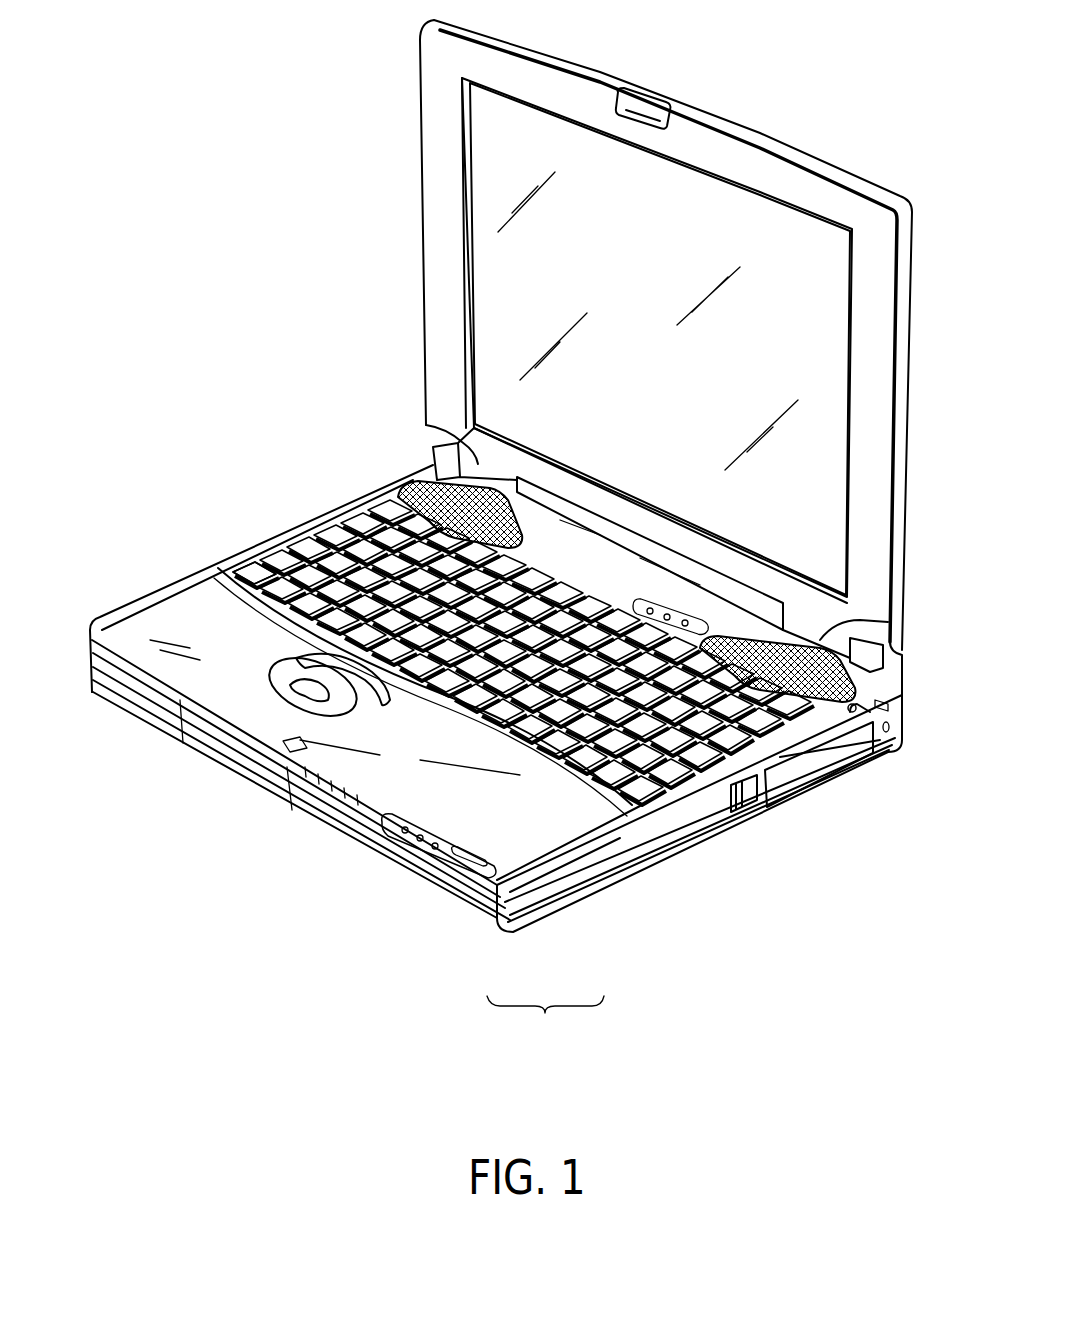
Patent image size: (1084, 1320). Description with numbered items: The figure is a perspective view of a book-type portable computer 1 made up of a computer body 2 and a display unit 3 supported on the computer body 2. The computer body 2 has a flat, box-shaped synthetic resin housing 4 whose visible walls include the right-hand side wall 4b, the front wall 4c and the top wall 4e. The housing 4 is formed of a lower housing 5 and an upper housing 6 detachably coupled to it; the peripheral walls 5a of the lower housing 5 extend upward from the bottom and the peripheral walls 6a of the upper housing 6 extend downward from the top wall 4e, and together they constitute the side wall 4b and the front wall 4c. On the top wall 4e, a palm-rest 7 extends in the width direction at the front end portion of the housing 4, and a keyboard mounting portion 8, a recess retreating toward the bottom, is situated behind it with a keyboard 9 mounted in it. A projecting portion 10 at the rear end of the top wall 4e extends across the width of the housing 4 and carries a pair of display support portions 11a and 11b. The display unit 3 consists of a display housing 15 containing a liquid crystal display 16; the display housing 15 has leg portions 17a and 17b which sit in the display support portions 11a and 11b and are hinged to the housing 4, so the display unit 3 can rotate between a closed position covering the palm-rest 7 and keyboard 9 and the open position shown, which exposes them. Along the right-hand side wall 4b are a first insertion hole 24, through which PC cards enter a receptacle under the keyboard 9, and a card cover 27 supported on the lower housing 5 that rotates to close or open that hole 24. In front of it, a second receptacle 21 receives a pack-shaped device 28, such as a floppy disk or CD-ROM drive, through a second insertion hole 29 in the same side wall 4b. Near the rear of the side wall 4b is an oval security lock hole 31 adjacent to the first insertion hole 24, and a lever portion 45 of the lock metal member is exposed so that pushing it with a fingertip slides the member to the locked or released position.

The portable computer 1 is at (780, 98).
The computer body 2 is at (126, 705).
The display unit 3 is at (884, 372).
The housing 4 is at (545, 1027).
The side wall 4b is at (735, 798).
The front wall 4c is at (262, 780).
The top wall 4e is at (200, 595).
The lower housing 5 is at (510, 930).
The peripheral walls 5a is at (400, 862).
The upper housing 6 is at (590, 920).
The peripheral walls 6a is at (813, 729).
The palm-rest 7 is at (230, 687).
The keyboard mounting portion 8 is at (331, 545).
The keyboard 9 is at (290, 565).
The projecting portion 10 is at (643, 547).
The display support portion 11a is at (507, 480).
The display support portion 11b is at (797, 605).
The display housing 15 is at (440, 275).
The liquid crystal display 16 is at (481, 194).
The leg portion 17a is at (480, 462).
The leg portion 17b is at (835, 638).
The second receptacle 21 is at (692, 842).
The first insertion hole 24 is at (865, 737).
The card cover 27 is at (800, 777).
The pack-shaped device 28 is at (565, 892).
The second insertion hole 29 is at (650, 857).
The lock hole 31 is at (892, 727).
The lever portion 45 is at (888, 708).